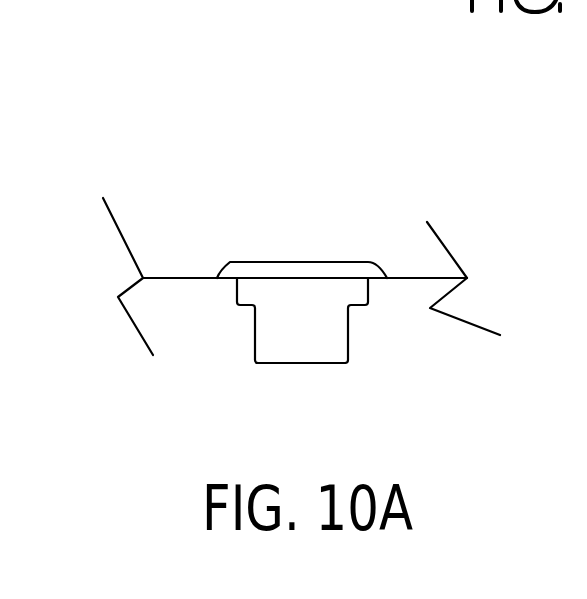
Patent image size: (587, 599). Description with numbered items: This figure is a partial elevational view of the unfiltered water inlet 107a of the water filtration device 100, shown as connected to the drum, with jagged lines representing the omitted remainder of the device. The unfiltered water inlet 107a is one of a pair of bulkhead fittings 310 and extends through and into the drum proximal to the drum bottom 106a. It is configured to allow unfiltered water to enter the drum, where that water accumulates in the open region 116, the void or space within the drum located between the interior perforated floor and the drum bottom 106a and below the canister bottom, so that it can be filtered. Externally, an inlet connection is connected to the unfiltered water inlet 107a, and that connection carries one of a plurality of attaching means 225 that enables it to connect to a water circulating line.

The water filtration device 100 is at (289, 47).
The drum bottom 106a is at (183, 278).
The unfiltered water inlet 107a is at (348, 340).
The bulkhead fittings 310 is at (343, 262).
The open region 116 is at (298, 236).
The attaching means 225 is at (268, 363).